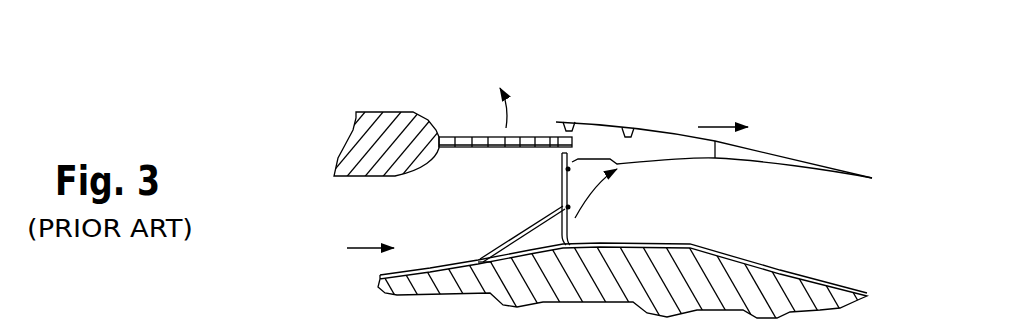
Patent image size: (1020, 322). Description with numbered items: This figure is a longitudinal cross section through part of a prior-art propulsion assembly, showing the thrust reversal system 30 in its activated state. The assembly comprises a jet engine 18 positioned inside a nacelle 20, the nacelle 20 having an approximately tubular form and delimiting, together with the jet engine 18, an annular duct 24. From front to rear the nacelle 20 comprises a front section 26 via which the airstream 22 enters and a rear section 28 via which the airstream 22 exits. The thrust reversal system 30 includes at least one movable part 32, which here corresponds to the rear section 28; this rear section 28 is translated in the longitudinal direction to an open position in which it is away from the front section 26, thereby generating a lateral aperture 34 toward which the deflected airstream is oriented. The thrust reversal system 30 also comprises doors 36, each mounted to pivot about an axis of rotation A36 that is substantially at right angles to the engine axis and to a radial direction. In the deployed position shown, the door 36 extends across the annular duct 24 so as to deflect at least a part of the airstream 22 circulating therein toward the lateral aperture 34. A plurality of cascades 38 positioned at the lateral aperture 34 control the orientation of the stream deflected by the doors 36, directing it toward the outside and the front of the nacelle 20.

The jet engine 18 is at (781, 291).
The nacelle 20 is at (270, 156).
The airstream 22 is at (355, 250).
The annular duct 24 is at (408, 212).
The front section 26 is at (356, 141).
The rear section 28 is at (688, 128).
The thrust reversal system 30 is at (495, 72).
The movable part 32 is at (657, 129).
The lateral aperture 34 is at (536, 104).
The door 36 is at (573, 193).
The axis of rotation A36 is at (568, 170).
The cascades 38 is at (462, 134).